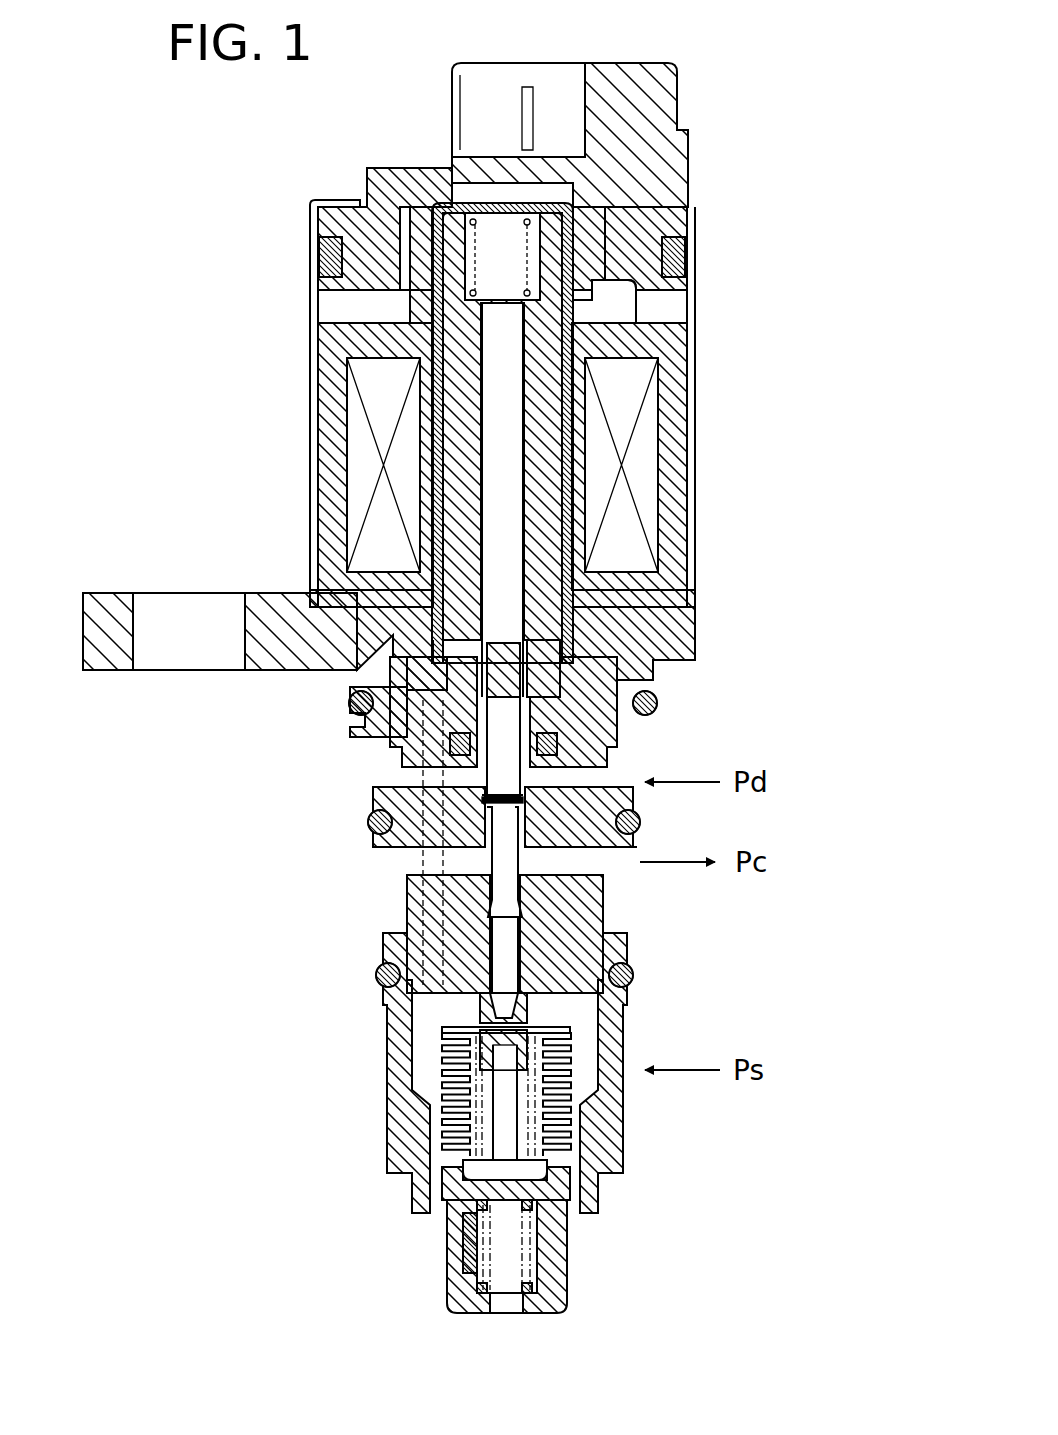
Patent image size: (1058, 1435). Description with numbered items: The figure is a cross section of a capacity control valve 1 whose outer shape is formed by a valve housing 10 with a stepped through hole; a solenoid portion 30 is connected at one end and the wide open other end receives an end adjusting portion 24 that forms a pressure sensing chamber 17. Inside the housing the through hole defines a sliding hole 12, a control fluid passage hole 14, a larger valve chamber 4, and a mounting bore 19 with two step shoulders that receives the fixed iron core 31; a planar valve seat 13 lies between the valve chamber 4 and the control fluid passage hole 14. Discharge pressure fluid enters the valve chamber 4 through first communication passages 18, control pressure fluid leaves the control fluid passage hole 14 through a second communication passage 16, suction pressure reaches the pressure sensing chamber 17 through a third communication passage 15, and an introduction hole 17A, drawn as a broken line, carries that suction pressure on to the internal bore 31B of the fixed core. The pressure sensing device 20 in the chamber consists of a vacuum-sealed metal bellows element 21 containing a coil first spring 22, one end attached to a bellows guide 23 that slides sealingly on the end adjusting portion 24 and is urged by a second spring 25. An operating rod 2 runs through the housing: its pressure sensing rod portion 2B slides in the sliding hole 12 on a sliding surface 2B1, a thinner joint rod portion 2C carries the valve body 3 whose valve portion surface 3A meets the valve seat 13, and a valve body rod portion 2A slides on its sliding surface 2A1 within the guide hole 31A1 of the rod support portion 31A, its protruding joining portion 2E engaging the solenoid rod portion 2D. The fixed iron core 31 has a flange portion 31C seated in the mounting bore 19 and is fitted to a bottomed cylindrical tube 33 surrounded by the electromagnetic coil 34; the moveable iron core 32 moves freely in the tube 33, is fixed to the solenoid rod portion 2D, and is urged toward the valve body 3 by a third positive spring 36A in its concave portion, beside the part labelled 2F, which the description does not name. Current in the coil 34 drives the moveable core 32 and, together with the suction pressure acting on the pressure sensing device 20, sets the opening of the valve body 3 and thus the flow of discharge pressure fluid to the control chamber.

The capacity control valve 1 is at (705, 100).
The operating rod 2 is at (836, 766).
The valve body rod portion 2A is at (470, 748).
The sliding surface 2A1 is at (530, 667).
The pressure sensing rod portion 2B is at (522, 1017).
The sliding surface 2B1 is at (534, 922).
The joint rod portion 2C is at (520, 972).
The solenoid rod portion 2D is at (512, 516).
The joining portion 2E is at (548, 634).
The cap 2F is at (602, 290).
The valve body 3 is at (520, 812).
The valve portion surface 3A is at (515, 862).
The valve chamber 4 is at (432, 803).
The valve housing 10 is at (582, 962).
The sliding hole 12 is at (500, 993).
The valve seat 13 is at (622, 827).
The control fluid passage hole 14 is at (620, 857).
The third communication passage 15 is at (625, 1083).
The second communication passage 16 is at (615, 882).
The pressure sensing chamber 17 is at (432, 1022).
The introduction hole 17A is at (410, 838).
The first communication passage 18 is at (520, 780).
The mounting bore 19 is at (395, 682).
The pressure sensing device 20 is at (577, 1122).
The bellows element 21 is at (577, 1152).
The first spring 22 is at (470, 1142).
The bellows guide 23 is at (465, 1240).
The end adjusting portion 24 is at (556, 1292).
The second spring 25 is at (480, 1292).
The solenoid portion 30 is at (270, 238).
The fixed iron core 31 is at (662, 442).
The rod support portion 31A is at (640, 702).
The guide hole 31A1 is at (420, 716).
The internal bore 31B is at (478, 470).
The flange portion 31C is at (358, 676).
The moveable iron core 32 is at (642, 342).
The bottomed cylindrical tube 33 is at (420, 362).
The electromagnetic coil 34 is at (360, 412).
The third positive spring 36A is at (512, 212).